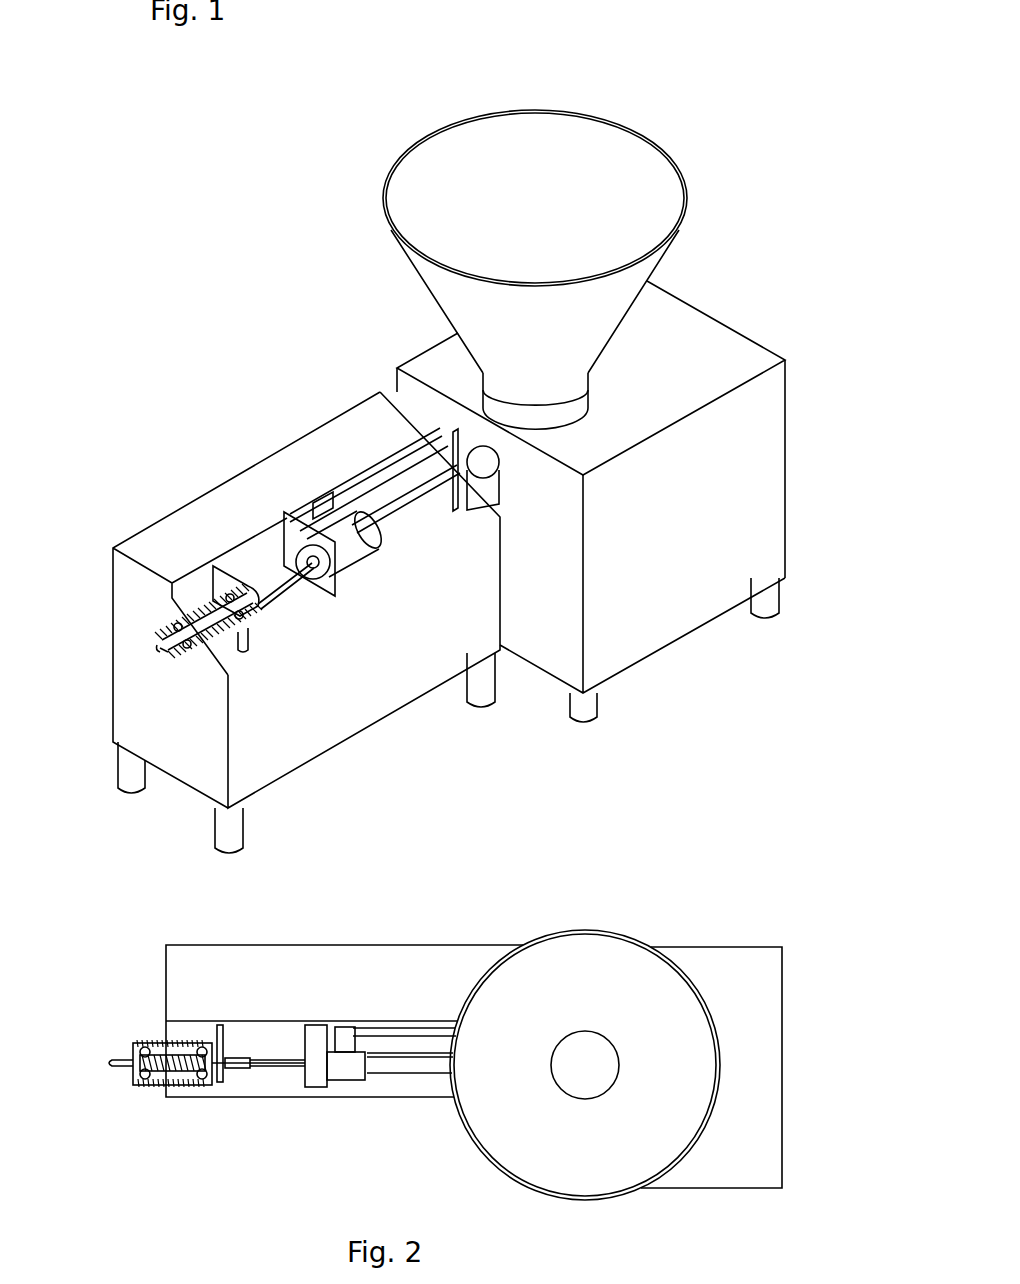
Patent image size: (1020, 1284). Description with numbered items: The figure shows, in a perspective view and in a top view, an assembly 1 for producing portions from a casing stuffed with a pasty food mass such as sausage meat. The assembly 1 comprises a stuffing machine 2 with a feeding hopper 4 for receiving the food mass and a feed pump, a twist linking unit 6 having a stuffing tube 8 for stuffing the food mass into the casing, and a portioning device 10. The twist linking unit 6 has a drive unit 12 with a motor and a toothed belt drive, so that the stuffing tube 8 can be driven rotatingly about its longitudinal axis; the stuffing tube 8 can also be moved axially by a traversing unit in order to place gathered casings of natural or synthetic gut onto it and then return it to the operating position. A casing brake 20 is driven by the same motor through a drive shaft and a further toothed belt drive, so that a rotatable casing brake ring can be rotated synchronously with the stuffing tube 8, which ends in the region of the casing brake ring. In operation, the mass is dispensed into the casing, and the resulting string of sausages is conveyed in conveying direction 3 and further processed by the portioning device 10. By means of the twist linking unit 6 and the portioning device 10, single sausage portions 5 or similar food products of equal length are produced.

In FIG. 1, the assembly 1 is at (132, 212).
In FIG. 1, the stuffing machine 2 is at (598, 416).
In FIG. 2, the stuffing machine 2 is at (616, 1034).
In FIG. 1, the conveying direction 3 is at (150, 655).
In FIG. 2, the conveying direction 3 is at (93, 1062).
In FIG. 1, the feeding hopper 4 is at (597, 185).
In FIG. 2, the feeding hopper 4 is at (636, 985).
In FIG. 2, the single sausage portions 5 is at (117, 1057).
In FIG. 1, the twist linking unit 6 is at (278, 418).
In FIG. 2, the twist linking unit 6 is at (372, 1140).
In FIG. 1, the stuffing tube 8 is at (292, 590).
In FIG. 2, the stuffing tube 8 is at (262, 1075).
In FIG. 1, the portioning device 10 is at (306, 622).
In FIG. 2, the portioning device 10 is at (166, 1150).
In FIG. 1, the drive unit 12 is at (365, 580).
In FIG. 1, the casing brake 20 is at (275, 625).
In FIG. 2, the casing brake 20 is at (220, 1105).